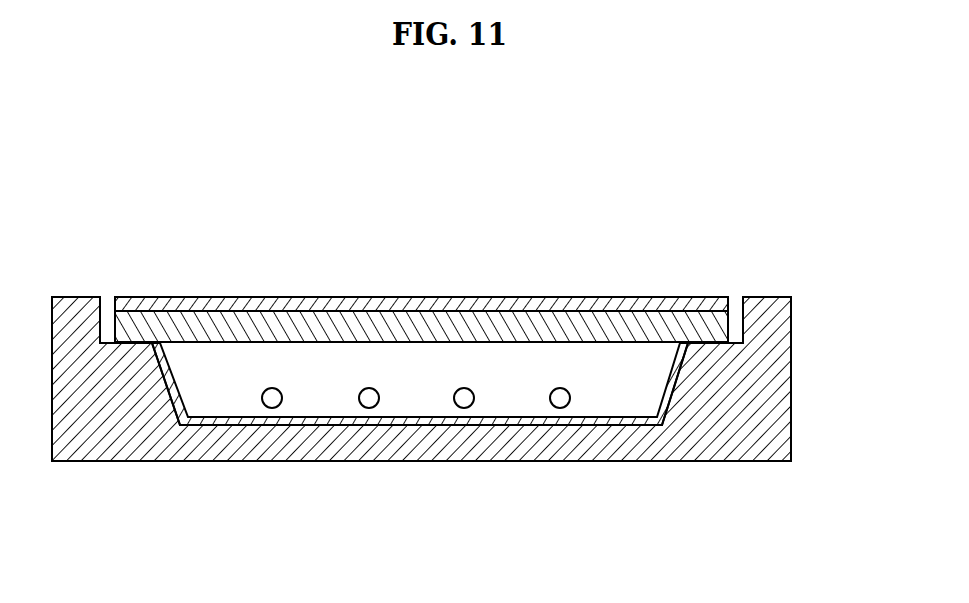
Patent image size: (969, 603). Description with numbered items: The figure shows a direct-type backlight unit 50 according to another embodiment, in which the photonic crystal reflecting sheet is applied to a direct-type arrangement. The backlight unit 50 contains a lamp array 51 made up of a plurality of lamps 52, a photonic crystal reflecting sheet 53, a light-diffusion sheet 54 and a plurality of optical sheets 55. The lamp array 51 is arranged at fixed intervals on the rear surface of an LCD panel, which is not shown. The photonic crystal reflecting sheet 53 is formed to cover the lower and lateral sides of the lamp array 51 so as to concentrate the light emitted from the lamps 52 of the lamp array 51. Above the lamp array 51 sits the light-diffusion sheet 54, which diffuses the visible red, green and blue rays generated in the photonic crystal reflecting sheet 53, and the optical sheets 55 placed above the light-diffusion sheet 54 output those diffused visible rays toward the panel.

The direct-type backlight unit 50 is at (802, 390).
The lamp array 51 is at (416, 474).
The lamps 52 is at (482, 508).
The photonic crystal reflecting sheet 53 is at (610, 418).
The light-diffusion sheet 54 is at (723, 315).
The optical sheets 55 is at (651, 298).